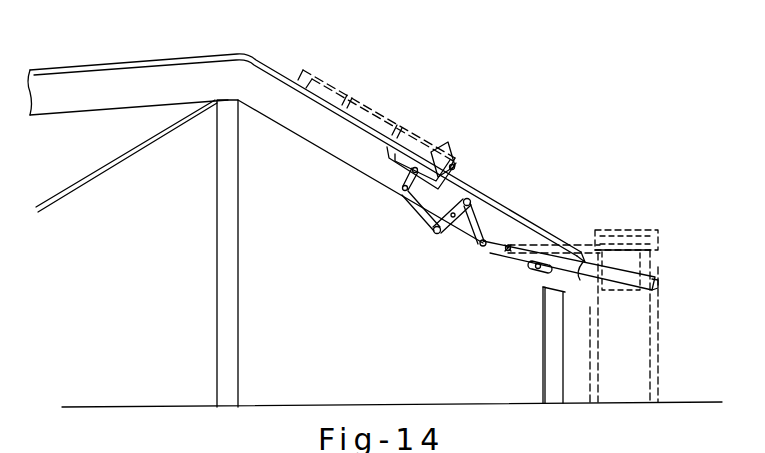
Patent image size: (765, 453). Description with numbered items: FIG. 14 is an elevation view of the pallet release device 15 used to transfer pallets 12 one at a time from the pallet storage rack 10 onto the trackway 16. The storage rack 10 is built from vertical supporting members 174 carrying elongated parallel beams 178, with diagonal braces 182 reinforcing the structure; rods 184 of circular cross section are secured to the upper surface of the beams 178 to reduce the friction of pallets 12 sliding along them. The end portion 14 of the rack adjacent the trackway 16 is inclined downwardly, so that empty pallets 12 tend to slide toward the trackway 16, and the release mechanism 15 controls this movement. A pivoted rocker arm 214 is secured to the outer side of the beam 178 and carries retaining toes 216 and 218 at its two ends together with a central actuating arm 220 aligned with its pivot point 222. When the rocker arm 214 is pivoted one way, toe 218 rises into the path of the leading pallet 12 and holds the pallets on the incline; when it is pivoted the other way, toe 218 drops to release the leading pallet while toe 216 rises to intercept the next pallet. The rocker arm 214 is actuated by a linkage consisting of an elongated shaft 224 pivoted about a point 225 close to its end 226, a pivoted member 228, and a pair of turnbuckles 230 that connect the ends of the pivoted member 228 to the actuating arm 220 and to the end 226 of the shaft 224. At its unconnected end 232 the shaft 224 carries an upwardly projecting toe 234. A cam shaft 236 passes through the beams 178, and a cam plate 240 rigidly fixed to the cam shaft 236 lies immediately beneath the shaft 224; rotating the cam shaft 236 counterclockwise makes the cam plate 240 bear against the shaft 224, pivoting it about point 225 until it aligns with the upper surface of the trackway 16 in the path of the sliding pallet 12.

The storage rack 10 is at (143, 59).
The pallet 12 is at (394, 120).
The end of the storage rack 14 is at (519, 186).
The pallet release device 15 is at (459, 238).
The trackway 16 is at (660, 355).
The vertical supporting member 174 is at (236, 303).
The beam 178 is at (95, 78).
The diagonal brace 182 is at (127, 162).
The rod 184 is at (181, 63).
The pivoted rocker arm 214 is at (432, 172).
The retaining toe 216 is at (385, 146).
The retaining toe 218 is at (455, 168).
The central actuating arm 220 is at (402, 188).
The pivot point 222 is at (412, 170).
The elongated shaft 224 is at (582, 275).
The pivot point 225 is at (508, 253).
The end of shaft 226 is at (484, 248).
The pivoted member 228 is at (441, 234).
The turnbuckle 230 is at (430, 219).
The unconnected end 232 is at (644, 290).
The upwardly projecting toe 234 is at (656, 283).
The cam shaft 236 is at (536, 272).
The cam plate 240 is at (543, 289).